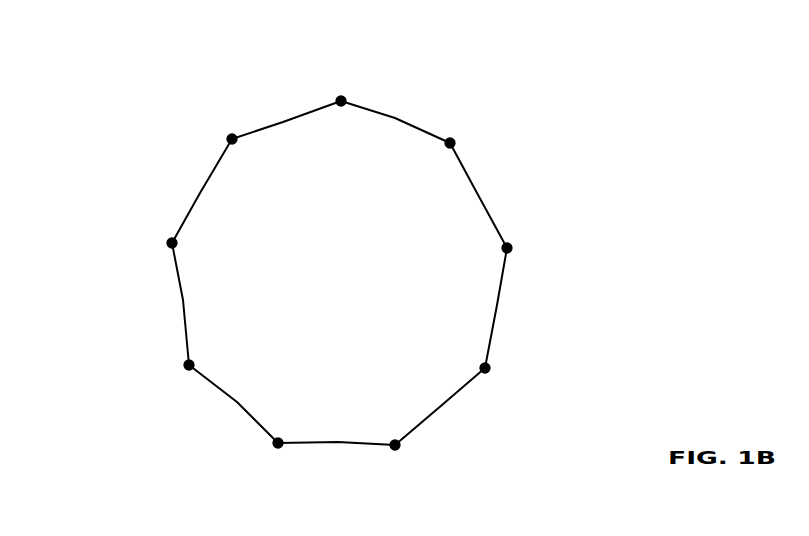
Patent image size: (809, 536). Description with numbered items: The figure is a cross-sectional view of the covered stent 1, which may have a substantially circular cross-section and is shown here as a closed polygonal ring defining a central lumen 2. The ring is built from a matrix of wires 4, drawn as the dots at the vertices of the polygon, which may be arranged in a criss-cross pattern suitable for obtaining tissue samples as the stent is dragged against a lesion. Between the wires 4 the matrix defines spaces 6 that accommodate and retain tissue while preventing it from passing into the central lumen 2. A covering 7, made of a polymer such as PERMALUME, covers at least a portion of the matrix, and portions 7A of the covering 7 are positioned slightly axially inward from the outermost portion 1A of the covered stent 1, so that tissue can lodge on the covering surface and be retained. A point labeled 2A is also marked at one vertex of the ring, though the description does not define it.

The covered stent 1 is at (118, 318).
The outermost portion 1A is at (487, 370).
The central lumen 2 is at (430, 230).
The vertex 2A is at (230, 139).
The wires 4 is at (510, 248).
The spaces 6 is at (395, 120).
The covering 7 is at (477, 192).
The portions of the covering 7A is at (283, 122).